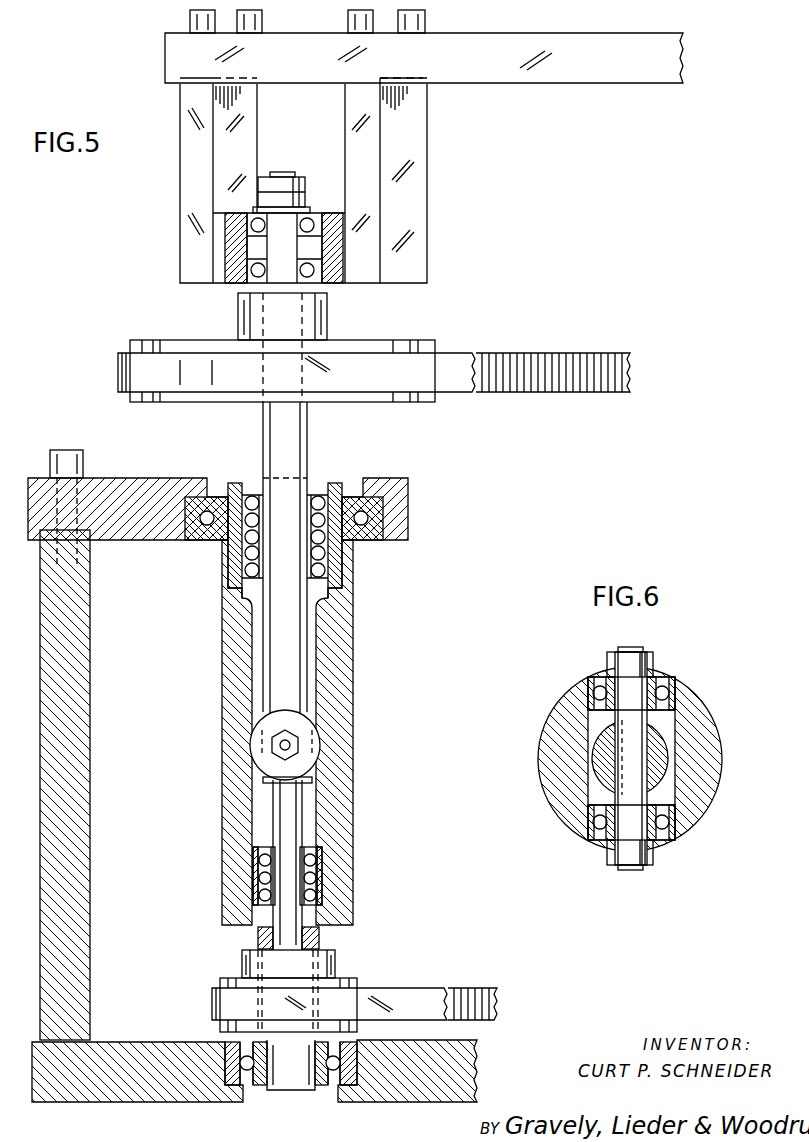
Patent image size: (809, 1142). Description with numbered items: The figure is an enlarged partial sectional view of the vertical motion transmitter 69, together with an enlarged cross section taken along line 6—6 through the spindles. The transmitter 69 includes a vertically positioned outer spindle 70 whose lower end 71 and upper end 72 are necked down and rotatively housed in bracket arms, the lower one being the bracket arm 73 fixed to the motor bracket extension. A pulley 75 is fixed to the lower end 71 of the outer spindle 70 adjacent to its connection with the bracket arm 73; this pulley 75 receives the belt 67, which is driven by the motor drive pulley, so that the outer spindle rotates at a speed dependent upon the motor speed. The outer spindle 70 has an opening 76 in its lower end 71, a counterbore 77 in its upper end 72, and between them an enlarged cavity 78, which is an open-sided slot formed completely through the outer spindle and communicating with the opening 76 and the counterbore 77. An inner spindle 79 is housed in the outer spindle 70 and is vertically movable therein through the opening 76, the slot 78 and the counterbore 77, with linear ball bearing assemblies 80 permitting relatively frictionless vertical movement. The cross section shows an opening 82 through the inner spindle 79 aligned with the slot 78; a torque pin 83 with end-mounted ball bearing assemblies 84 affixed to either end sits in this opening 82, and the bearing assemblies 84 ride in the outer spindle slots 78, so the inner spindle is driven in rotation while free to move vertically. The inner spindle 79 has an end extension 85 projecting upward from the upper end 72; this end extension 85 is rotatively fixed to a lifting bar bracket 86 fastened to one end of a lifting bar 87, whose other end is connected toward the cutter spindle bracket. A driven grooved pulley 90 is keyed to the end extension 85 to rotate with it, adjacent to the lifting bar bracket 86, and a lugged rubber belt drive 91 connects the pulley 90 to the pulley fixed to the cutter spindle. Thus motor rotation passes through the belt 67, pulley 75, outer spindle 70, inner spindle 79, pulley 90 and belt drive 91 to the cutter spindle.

In FIG. 5, the belt 67 is at (476, 988).
In FIG. 5, the vertical motion transmitter 69 is at (210, 722).
In FIG. 5, the outer spindle 70 is at (222, 655).
In FIG. 6, the outer spindle 70 is at (545, 790).
In FIG. 5, the lower end 71 is at (322, 1087).
In FIG. 5, the upper end 72 is at (232, 486).
In FIG. 5, the bracket arm 73 is at (426, 1085).
In FIG. 5, the pulley 75 is at (348, 978).
In FIG. 5, the opening 76 is at (260, 928).
In FIG. 5, the counterbore 77 is at (325, 490).
In FIG. 5, the cavity 78 is at (318, 642).
In FIG. 6, the cavity 78 is at (676, 832).
In FIG. 5, the inner spindle 79 is at (283, 824).
In FIG. 6, the inner spindle 79 is at (655, 736).
In FIG. 5, the linear ball bearing assemblies 80 is at (342, 565).
In FIG. 6, the opening 82 is at (660, 680).
In FIG. 6, the torque pin 83 is at (620, 733).
In FIG. 6, the ball bearing assemblies 84 is at (590, 678).
In FIG. 5, the end extension 85 is at (250, 274).
In FIG. 5, the lifting bar bracket 86 is at (427, 200).
In FIG. 5, the lifting bar 87 is at (536, 76).
In FIG. 5, the driven grooved pulley 90 is at (412, 340).
In FIG. 5, the lugged rubber belt drive 91 is at (507, 352).
In FIG. 5, the section line 6— 6 is at (380, 769).